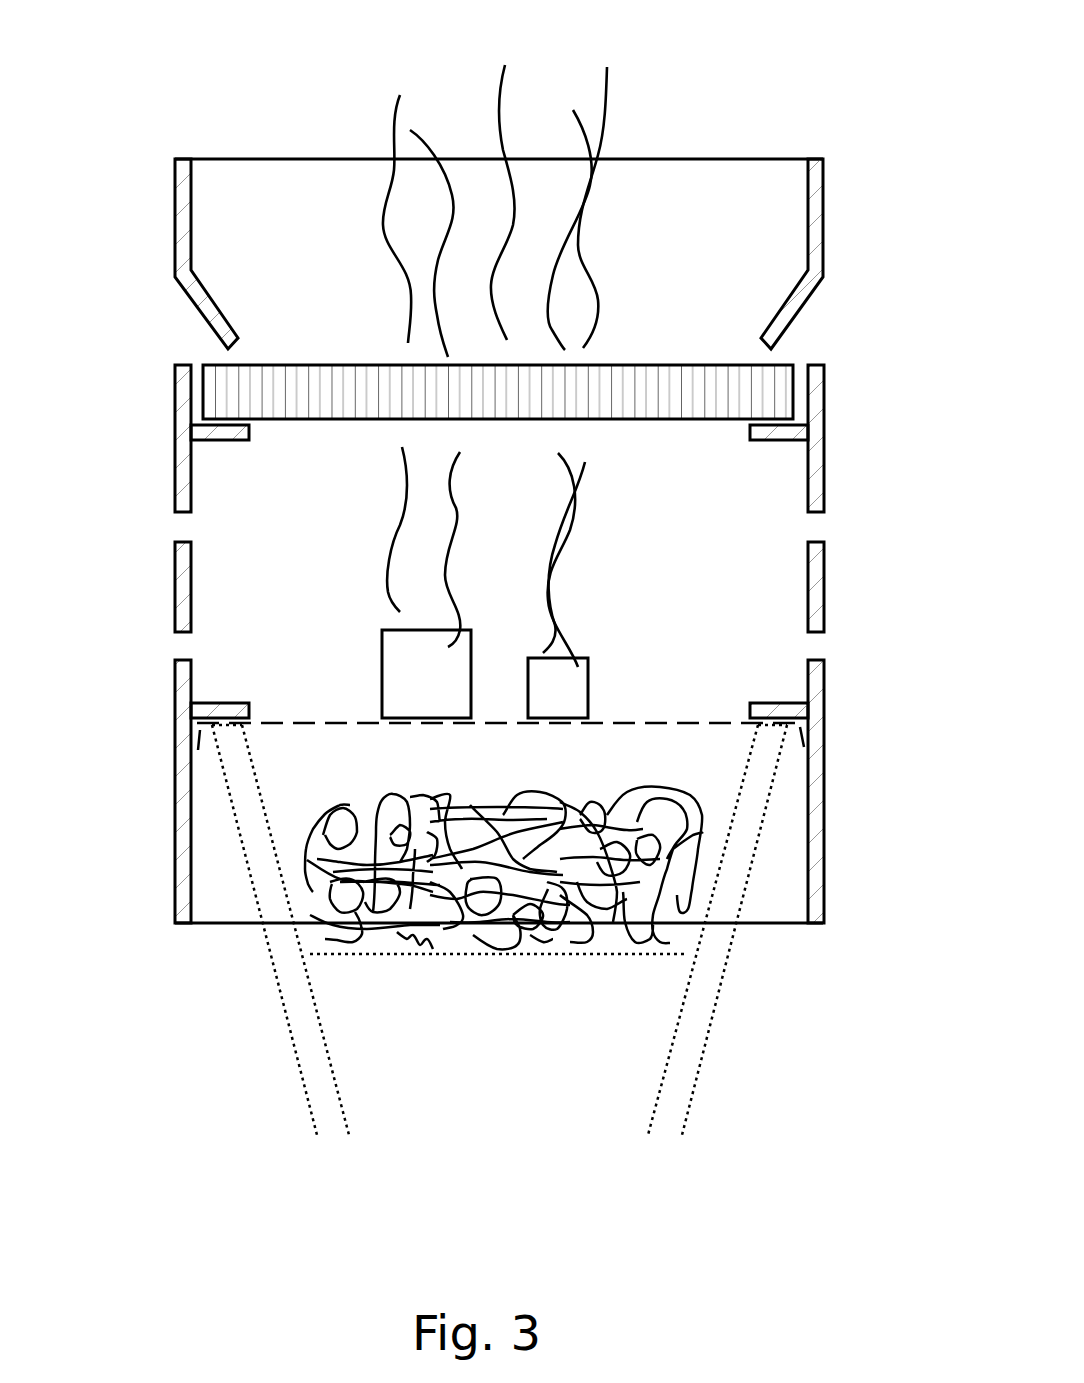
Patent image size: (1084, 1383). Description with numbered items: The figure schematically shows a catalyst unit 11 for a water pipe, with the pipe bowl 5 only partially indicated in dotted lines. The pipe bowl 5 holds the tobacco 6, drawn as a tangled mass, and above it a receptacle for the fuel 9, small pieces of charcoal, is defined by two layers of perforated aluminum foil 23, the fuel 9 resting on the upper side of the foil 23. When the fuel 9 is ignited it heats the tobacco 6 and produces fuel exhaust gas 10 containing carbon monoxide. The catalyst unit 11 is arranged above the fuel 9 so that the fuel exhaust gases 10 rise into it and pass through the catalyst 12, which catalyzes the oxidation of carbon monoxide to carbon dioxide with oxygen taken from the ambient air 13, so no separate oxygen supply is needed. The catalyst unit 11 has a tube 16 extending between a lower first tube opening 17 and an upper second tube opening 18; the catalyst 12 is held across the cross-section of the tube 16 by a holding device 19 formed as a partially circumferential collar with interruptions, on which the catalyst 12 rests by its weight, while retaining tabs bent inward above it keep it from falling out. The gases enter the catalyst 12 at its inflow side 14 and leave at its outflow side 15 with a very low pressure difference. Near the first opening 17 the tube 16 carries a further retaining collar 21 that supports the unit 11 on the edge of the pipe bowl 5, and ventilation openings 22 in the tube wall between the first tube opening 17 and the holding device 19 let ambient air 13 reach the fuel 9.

The pipe bowl 5 is at (698, 1023).
The tobacco 6 is at (677, 848).
The fuel 9 is at (435, 688).
The fuel exhaust gas 10 is at (425, 472).
The catalyst unit 11 is at (165, 90).
The catalyst 12 is at (755, 388).
The ambient air 13 is at (262, 530).
The inflow side 14 is at (676, 438).
The outflow side 15 is at (674, 344).
The tube 16 is at (175, 215).
The first tube opening 17 is at (500, 1017).
The second tube opening 18 is at (470, 118).
The holding device 19 is at (197, 312).
The retaining collar 21 is at (208, 710).
The ventilation openings 22 is at (178, 537).
The perforated aluminum foil 23 is at (683, 725).